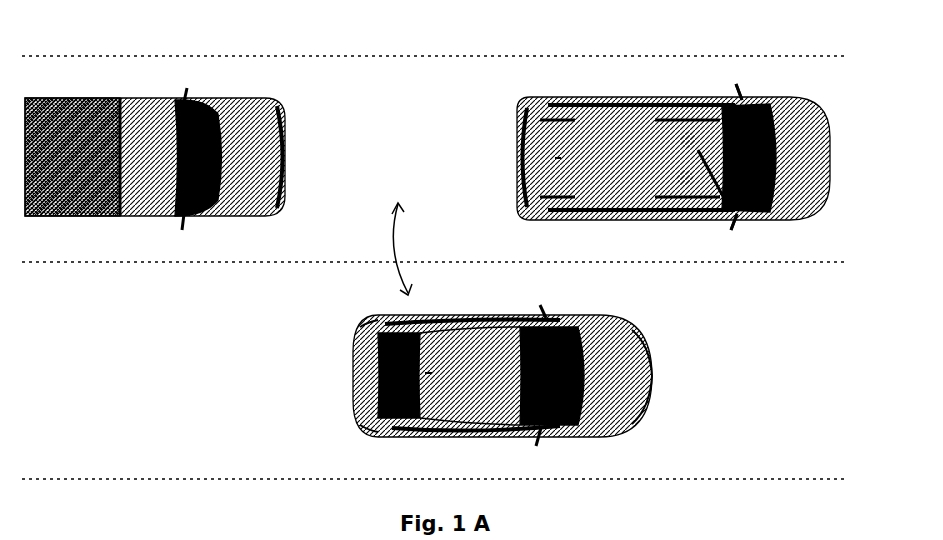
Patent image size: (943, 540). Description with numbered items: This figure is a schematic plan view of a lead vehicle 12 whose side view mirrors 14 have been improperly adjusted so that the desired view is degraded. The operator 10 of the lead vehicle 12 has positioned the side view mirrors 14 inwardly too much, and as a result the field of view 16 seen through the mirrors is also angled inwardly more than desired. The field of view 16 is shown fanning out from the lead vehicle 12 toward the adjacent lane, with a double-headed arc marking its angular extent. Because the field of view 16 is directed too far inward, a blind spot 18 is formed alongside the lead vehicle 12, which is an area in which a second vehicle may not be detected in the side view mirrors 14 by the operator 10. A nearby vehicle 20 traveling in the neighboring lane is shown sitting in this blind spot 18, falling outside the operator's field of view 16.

The operator 10 is at (694, 136).
The lead vehicle 12 is at (630, 168).
The side view mirrors 14 is at (752, 86).
The field of view 16 is at (400, 249).
The blind spot 18 is at (627, 301).
The nearby vehicle 20 is at (492, 387).